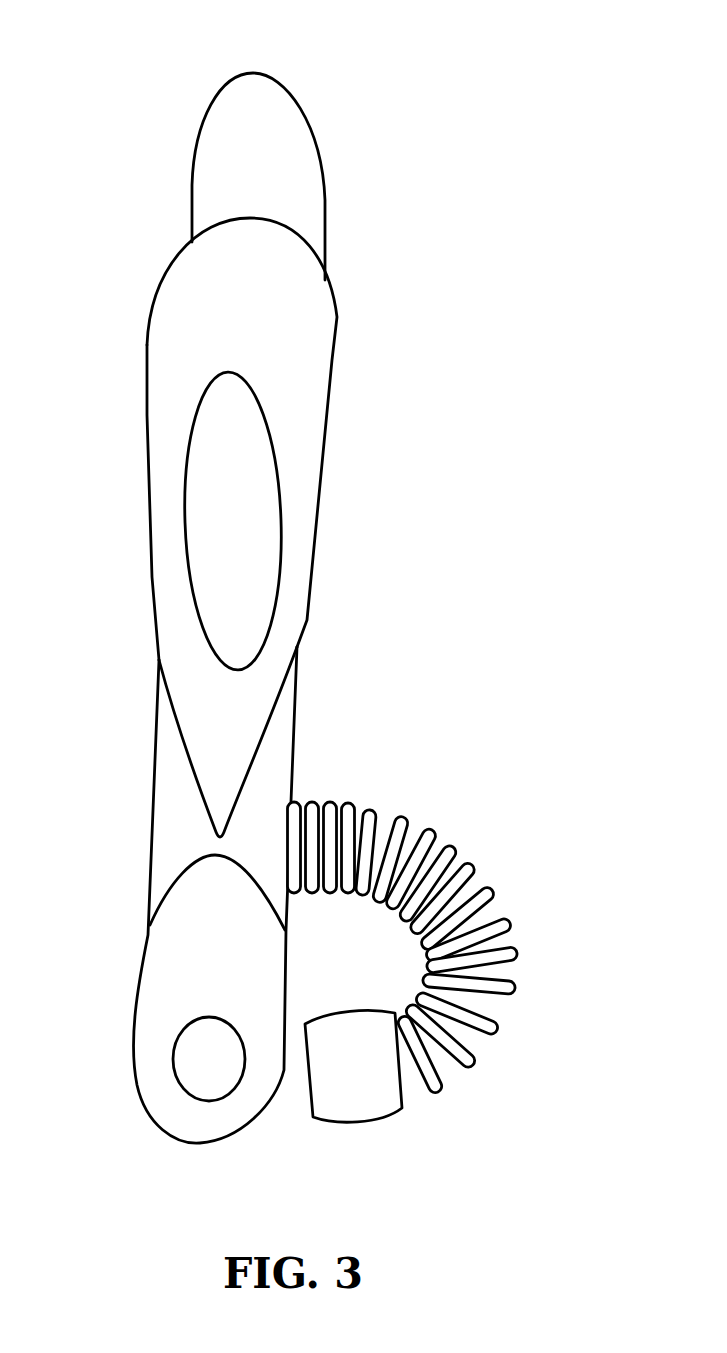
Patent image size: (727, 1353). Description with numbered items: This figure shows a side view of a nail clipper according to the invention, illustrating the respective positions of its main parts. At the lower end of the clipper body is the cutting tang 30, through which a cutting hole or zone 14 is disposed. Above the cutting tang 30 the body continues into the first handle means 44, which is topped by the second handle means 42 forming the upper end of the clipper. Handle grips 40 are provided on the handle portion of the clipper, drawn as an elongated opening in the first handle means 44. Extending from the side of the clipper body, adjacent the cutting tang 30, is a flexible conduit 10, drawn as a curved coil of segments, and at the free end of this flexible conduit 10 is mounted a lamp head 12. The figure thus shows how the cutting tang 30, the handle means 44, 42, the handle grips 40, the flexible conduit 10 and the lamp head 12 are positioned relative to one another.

The flexible conduit 10 is at (520, 952).
The lamp head 12 is at (360, 1102).
The cutting hole or zone 14 is at (207, 1075).
The cutting tang 30 is at (158, 992).
The handle grips 40 is at (247, 513).
The second handle means 42 is at (263, 100).
The first handle means 44 is at (172, 342).